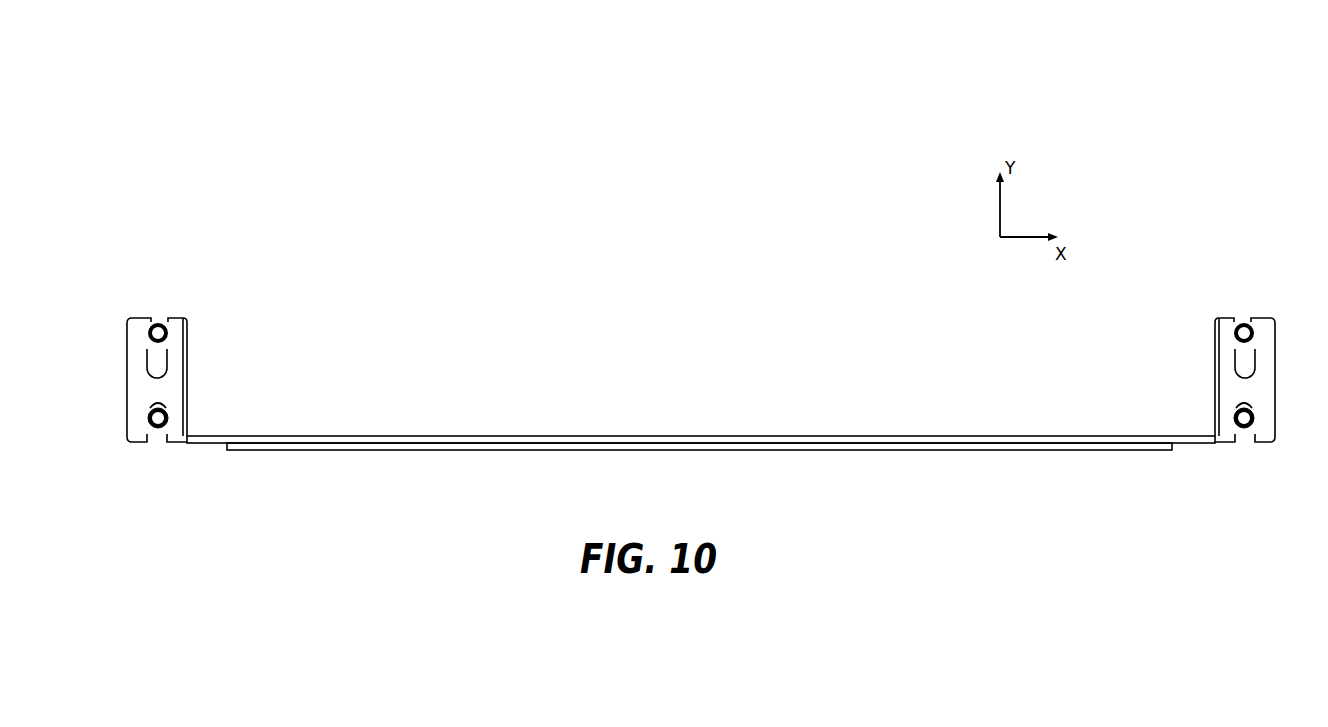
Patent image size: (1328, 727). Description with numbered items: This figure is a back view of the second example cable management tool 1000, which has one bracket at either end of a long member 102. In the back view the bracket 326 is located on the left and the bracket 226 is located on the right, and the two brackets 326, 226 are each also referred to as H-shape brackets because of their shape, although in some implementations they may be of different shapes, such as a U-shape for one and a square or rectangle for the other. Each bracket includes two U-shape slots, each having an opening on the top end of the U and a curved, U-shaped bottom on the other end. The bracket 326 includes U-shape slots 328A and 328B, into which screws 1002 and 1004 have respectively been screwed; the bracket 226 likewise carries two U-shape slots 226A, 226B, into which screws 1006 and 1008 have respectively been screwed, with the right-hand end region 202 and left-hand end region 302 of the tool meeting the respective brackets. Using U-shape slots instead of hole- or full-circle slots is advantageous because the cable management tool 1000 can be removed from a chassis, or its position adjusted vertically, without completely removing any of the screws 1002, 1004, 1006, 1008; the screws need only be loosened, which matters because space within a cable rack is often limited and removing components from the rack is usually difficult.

The second example cable management tool 1000 is at (370, 146).
The frame member 102 is at (503, 450).
The second bracket 302 is at (227, 450).
The U-shape slot 328A is at (176, 351).
The U-shape slot 328B is at (172, 418).
The bracket 326 is at (150, 402).
The screw 1002 is at (158, 322).
The screw 1004 is at (158, 428).
The first bracket 202 is at (1200, 450).
The bracket 226 is at (1250, 390).
The slot of first bracket 226A is at (1231, 363).
The hole of first bracket 226B is at (1228, 418).
The screw 1006 is at (1244, 322).
The screw 1008 is at (1244, 428).